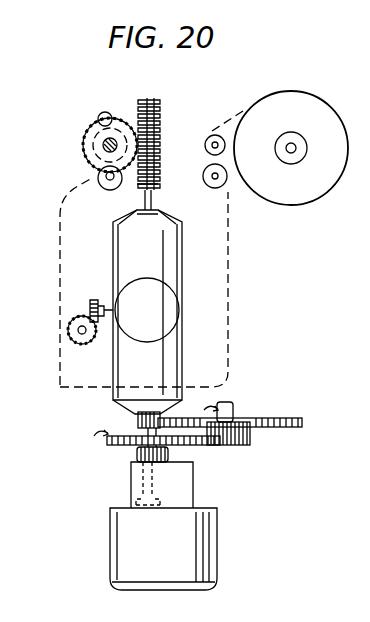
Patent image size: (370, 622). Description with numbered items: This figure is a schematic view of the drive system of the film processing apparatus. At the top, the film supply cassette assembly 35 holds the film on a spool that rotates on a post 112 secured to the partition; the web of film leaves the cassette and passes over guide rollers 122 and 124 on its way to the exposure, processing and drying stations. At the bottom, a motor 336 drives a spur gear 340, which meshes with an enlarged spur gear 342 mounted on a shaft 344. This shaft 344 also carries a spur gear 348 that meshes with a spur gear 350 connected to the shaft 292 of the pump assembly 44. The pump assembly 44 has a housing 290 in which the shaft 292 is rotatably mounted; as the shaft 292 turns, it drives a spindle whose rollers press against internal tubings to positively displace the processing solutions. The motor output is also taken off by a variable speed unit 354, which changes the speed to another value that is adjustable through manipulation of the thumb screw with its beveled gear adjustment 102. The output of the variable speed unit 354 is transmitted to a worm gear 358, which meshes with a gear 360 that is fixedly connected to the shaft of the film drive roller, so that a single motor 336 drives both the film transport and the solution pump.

The worm gear 358 is at (138, 104).
The gear 360 is at (86, 133).
The guide roller 122 is at (208, 139).
The guide roller 124 is at (209, 184).
The film supply cassette assembly 35 is at (316, 85).
The post 112 is at (293, 151).
The variable speed unit 354 is at (121, 258).
The beveled gear adjustment 102 is at (82, 345).
The spur gear 340 is at (136, 418).
The enlarged spur gear 342 is at (302, 425).
The shaft 344 is at (234, 407).
The spur gear 348 is at (250, 440).
The spur gear 350 is at (108, 447).
The shaft 292 is at (170, 457).
The housing 290 is at (131, 481).
The pump assembly 44 is at (221, 489).
The motor 336 is at (218, 541).